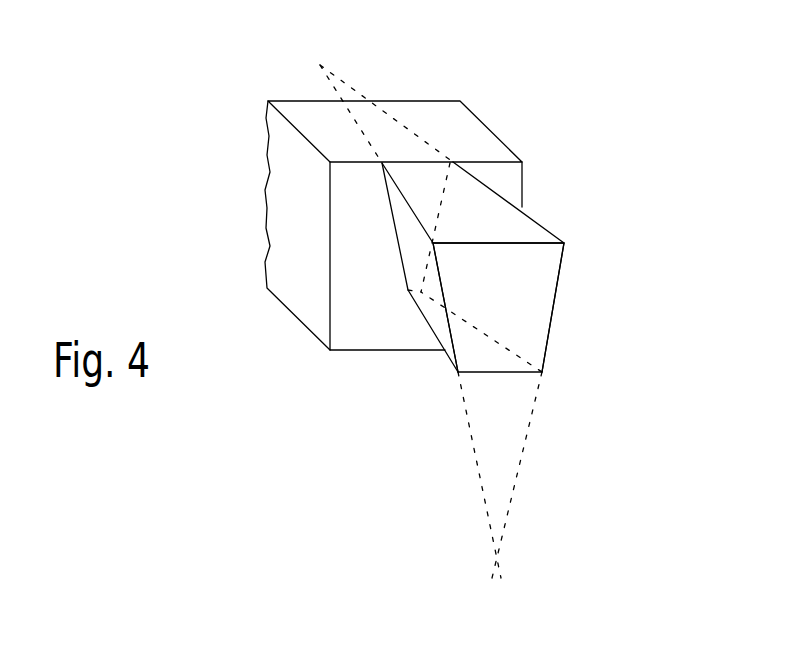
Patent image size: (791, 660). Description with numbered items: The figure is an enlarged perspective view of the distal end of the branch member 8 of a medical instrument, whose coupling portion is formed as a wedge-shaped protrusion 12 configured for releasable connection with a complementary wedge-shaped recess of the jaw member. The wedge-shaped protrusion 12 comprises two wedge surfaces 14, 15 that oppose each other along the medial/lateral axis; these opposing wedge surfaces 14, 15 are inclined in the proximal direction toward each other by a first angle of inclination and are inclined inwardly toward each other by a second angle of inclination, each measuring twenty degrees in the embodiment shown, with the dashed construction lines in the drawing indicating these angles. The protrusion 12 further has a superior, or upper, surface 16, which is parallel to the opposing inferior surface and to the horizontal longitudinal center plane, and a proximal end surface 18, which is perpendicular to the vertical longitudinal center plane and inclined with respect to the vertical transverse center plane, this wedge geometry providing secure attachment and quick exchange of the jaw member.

The workpiece block 8 is at (275, 223).
The wedge-shaped protrusion 12 is at (626, 124).
The wedge surface 14 is at (440, 318).
The wedge surface 15 is at (544, 264).
The superior surface 16 is at (514, 219).
The proximal end surface 18 is at (536, 313).